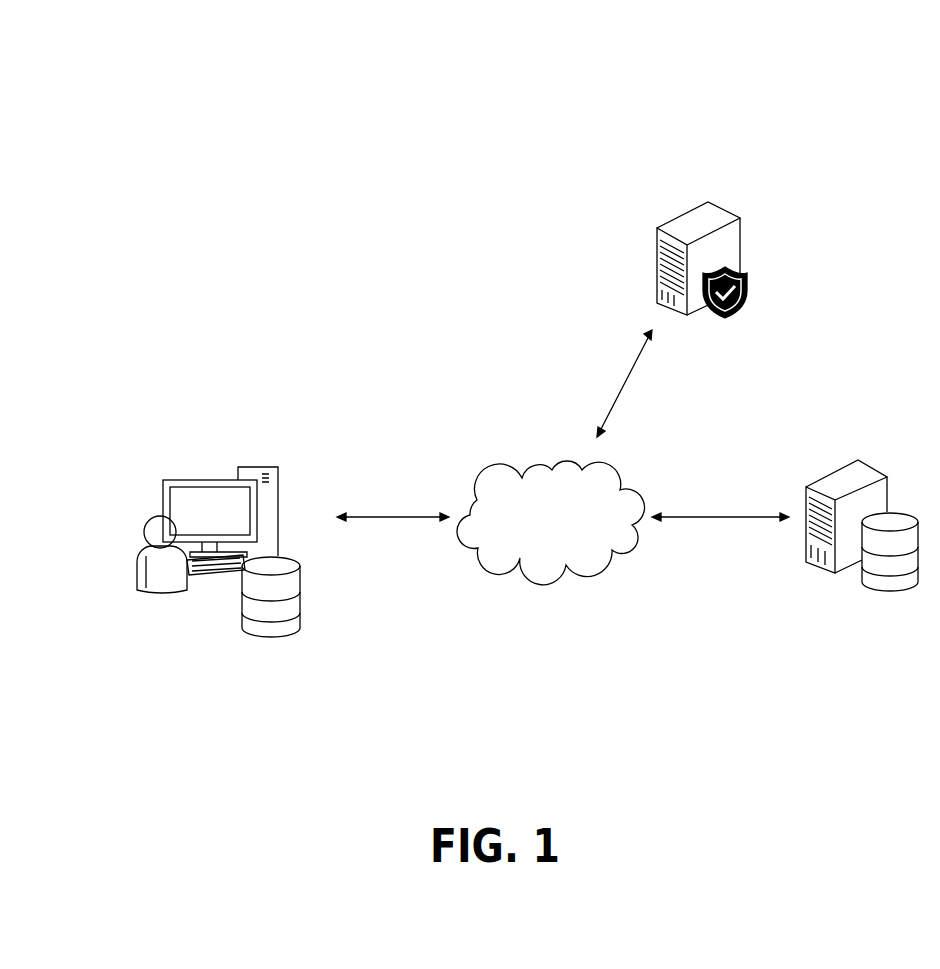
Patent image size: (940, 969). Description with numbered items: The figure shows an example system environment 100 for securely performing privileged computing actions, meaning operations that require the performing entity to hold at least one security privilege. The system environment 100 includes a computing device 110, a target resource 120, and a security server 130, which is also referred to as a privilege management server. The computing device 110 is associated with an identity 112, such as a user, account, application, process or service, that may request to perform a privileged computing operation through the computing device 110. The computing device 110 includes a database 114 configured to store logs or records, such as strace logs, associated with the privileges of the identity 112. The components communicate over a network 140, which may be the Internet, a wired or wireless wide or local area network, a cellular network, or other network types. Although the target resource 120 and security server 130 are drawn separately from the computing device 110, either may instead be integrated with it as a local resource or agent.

The system environment 100 is at (628, 60).
The computing device 110 is at (277, 473).
The identity 112 is at (137, 563).
The database 114 is at (302, 600).
The target resource 120 is at (863, 462).
The security server 130 is at (713, 205).
The network 140 is at (617, 470).